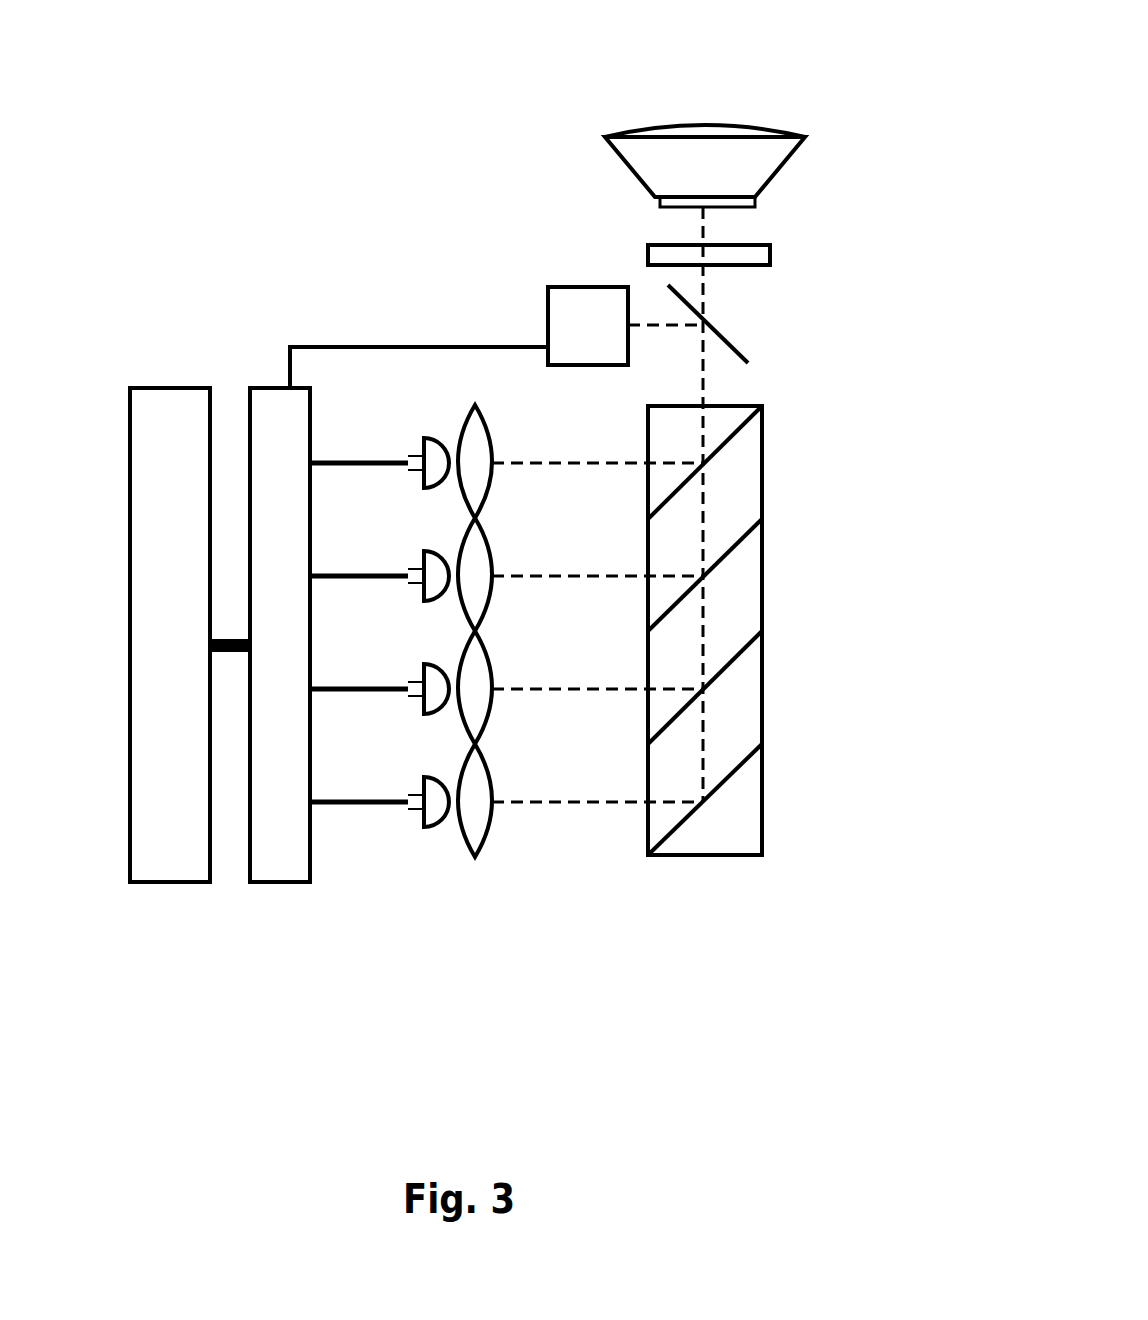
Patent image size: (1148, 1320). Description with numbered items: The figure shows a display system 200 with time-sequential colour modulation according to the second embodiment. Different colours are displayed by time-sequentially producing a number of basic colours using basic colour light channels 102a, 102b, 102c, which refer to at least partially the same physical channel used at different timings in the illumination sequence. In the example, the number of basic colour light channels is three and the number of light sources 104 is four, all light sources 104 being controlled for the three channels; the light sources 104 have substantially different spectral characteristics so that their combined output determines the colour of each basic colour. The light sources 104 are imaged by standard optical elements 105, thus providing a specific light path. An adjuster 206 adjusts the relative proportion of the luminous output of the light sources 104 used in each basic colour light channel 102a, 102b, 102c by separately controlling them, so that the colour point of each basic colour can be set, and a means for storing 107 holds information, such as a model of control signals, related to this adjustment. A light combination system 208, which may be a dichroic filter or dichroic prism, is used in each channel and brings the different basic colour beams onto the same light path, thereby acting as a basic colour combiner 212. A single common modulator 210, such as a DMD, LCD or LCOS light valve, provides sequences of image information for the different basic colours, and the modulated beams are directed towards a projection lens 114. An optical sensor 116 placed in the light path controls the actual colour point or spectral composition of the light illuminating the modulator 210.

The display system 200 is at (240, 62).
The means for storing 107 is at (172, 863).
The adjuster 206 is at (272, 863).
The optical sensor 116 is at (547, 307).
The projection lens 114 is at (727, 165).
The single common modulator 210 is at (753, 265).
The light combination system 208 is at (763, 669).
The basic colour combiner 212 is at (749, 835).
The light sources 104 is at (425, 471).
The optical elements 105 is at (468, 487).
The basic colour light channel 102a is at (566, 978).
The basic colour light channel 102b is at (486, 752).
The basic colour light channel 102c is at (482, 752).